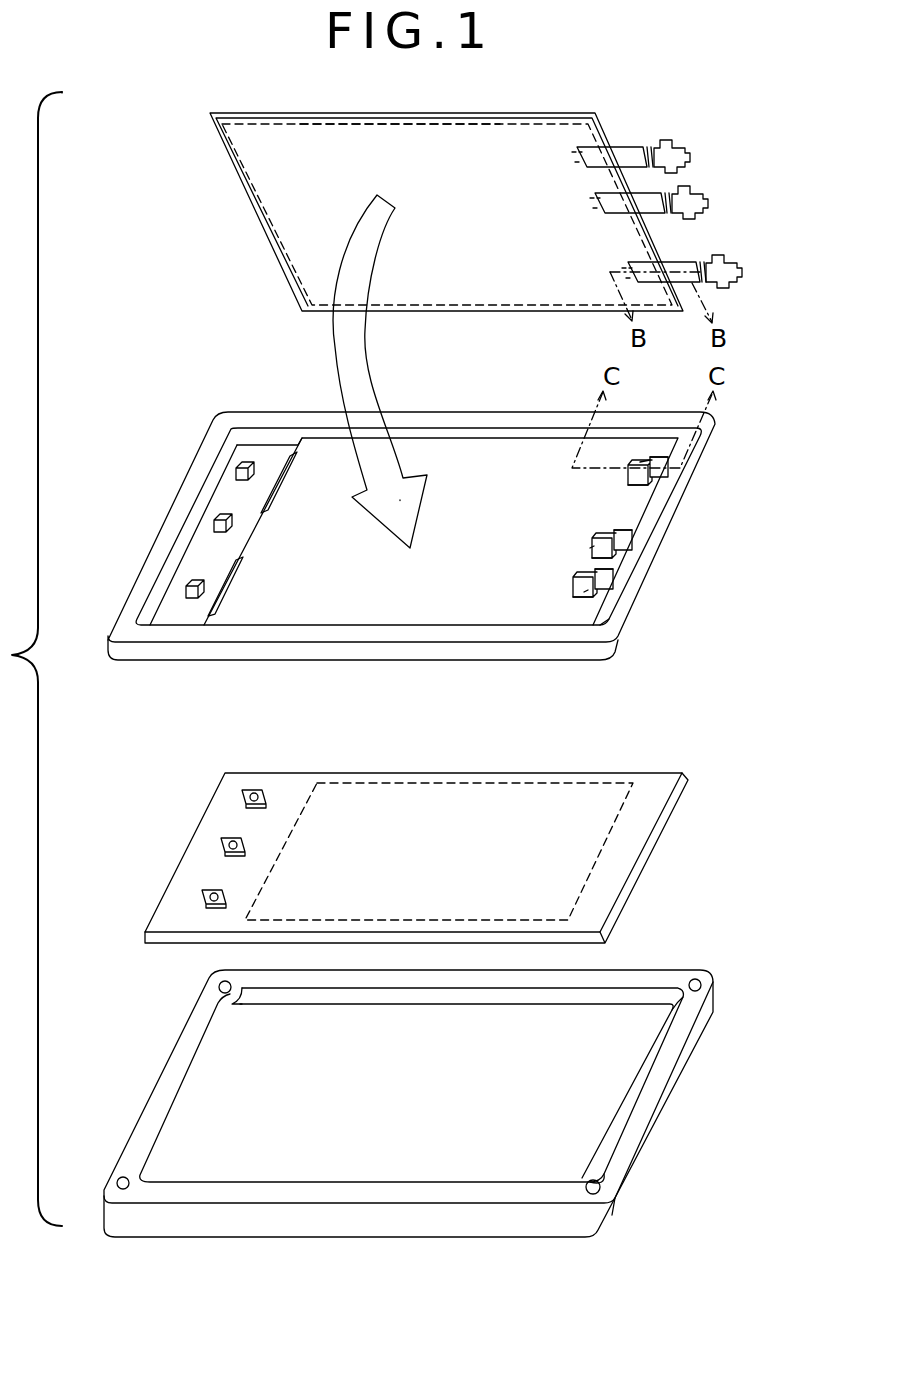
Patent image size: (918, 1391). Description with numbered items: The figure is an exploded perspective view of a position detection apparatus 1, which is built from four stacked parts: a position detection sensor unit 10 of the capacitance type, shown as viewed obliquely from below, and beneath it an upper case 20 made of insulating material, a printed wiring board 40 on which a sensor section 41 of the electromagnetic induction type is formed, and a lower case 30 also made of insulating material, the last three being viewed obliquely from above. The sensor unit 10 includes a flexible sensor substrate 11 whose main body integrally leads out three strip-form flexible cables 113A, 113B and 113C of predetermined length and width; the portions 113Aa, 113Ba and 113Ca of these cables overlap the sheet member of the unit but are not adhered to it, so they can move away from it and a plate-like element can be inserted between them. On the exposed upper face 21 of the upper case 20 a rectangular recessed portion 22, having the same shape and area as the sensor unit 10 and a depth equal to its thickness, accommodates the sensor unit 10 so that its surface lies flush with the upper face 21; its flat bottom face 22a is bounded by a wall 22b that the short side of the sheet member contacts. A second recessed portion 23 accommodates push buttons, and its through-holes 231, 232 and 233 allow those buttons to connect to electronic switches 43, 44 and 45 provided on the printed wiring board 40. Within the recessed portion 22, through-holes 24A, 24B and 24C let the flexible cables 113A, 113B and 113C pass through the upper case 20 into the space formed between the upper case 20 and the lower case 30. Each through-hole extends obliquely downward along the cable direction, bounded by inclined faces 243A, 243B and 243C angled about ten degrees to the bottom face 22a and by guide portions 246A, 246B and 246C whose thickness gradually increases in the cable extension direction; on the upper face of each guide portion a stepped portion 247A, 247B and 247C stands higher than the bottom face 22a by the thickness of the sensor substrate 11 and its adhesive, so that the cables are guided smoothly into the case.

The position detection apparatus 1 is at (103, 264).
The position detection sensor unit 10 is at (224, 165).
The sensor substrate 11 is at (383, 132).
The flexible cable 113A is at (743, 271).
The portion of flexible cable 113Aa is at (652, 264).
The flexible cable 113B is at (709, 198).
The portion of flexible cable 113Ba is at (628, 204).
The flexible cable 113C is at (691, 155).
The portion of flexible cable 113Ca is at (607, 152).
The upper case 20 is at (189, 460).
The upper face 21 is at (249, 421).
The recessed portion 22 is at (358, 606).
The bottom face 22a is at (462, 463).
The wall 22b is at (609, 630).
The recessed portion 23 is at (190, 557).
The through-hole 231 is at (238, 462).
The through-hole 232 is at (221, 518).
The through-hole 233 is at (196, 592).
The through-hole 24A is at (650, 488).
The through-hole 24B is at (615, 560).
The through-hole 24C is at (598, 598).
The inclined face 243A is at (643, 462).
The inclined face 243B is at (592, 548).
The inclined face 243C is at (585, 592).
The guide portion 246A is at (665, 458).
The guide portion 246B is at (626, 535).
The guide portion 246C is at (607, 575).
The stepped portion 247A is at (642, 484).
The stepped portion 247B is at (608, 556).
The stepped portion 247C is at (590, 596).
The lower case 30 is at (159, 1068).
The printed wiring board 40 is at (169, 868).
The sensor section 41 is at (507, 806).
The electronic switch 43 is at (248, 793).
The electronic switch 44 is at (228, 841).
The electronic switch 45 is at (210, 893).